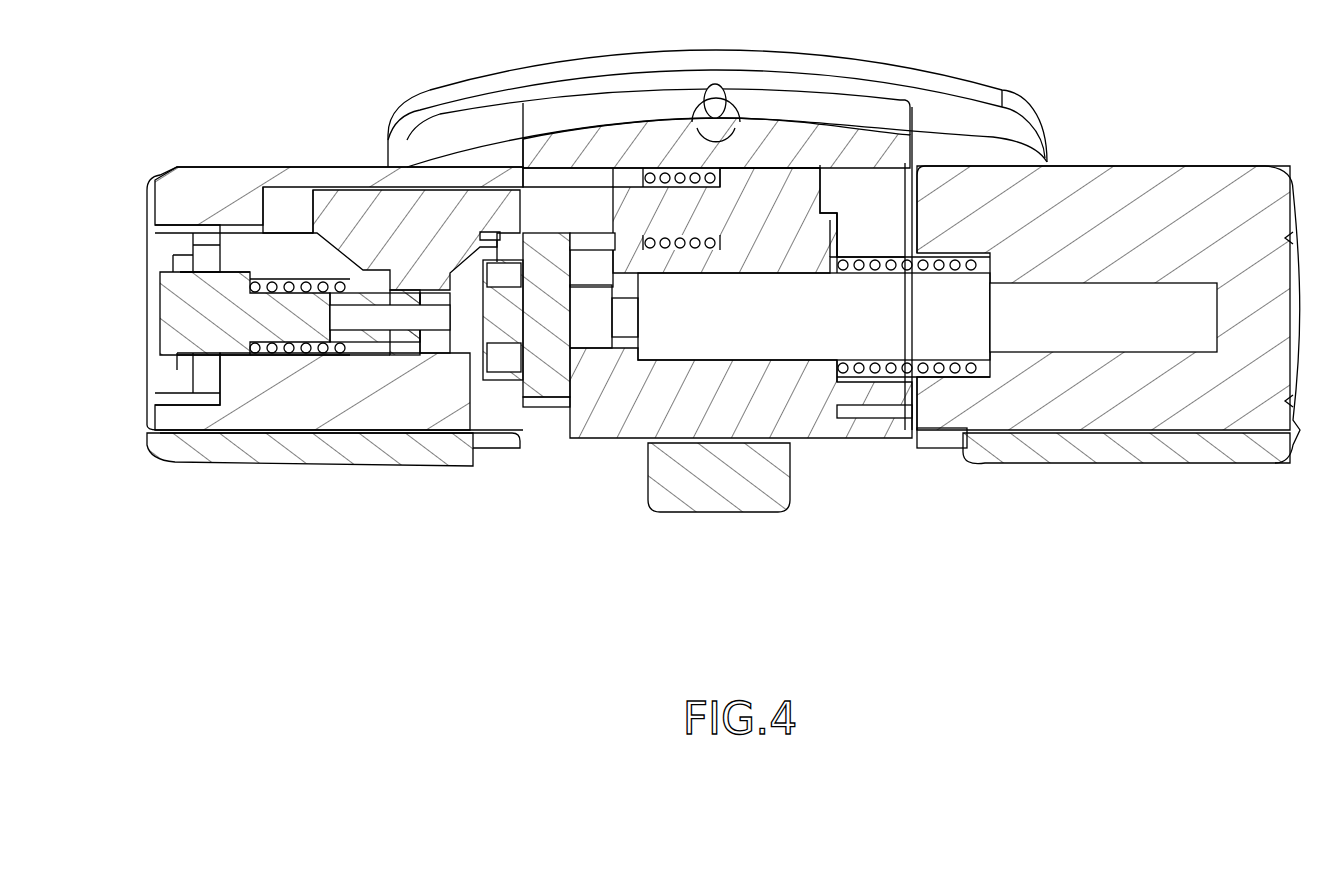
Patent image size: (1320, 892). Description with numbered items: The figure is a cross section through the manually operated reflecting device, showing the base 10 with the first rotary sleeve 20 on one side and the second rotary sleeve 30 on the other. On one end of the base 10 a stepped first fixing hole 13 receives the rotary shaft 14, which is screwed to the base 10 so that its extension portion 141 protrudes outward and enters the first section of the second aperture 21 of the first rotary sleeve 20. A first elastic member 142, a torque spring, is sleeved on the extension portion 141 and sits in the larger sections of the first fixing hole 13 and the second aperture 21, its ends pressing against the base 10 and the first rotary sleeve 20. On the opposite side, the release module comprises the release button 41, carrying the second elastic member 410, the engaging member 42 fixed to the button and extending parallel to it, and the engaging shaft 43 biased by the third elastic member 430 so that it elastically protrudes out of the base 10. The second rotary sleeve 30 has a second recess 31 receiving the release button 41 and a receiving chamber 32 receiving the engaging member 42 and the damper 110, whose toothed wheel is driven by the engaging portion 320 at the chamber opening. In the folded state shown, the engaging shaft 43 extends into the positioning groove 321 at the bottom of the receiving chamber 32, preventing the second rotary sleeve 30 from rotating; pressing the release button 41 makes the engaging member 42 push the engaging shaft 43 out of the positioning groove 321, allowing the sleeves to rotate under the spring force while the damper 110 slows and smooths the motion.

The base 10 is at (612, 426).
The damper 110 is at (548, 392).
The first fixing hole 13 is at (685, 358).
The rotary shaft 14 is at (795, 343).
The extension portion 141 is at (953, 343).
The first elastic member 142 is at (887, 372).
The first rotary sleeve 20 is at (1112, 185).
The second aperture 21 is at (1178, 298).
The second rotary sleeve 30 is at (197, 183).
The second recess 31 is at (262, 265).
The receiving chamber 32 is at (465, 343).
The engaging portion 320 is at (497, 255).
The positioning groove 321 is at (305, 185).
The release button 41 is at (166, 285).
The second elastic member 410 is at (297, 283).
The engaging member 42 is at (415, 200).
The third elastic member 430 is at (665, 175).
The engaging shaft 43 is at (787, 198).